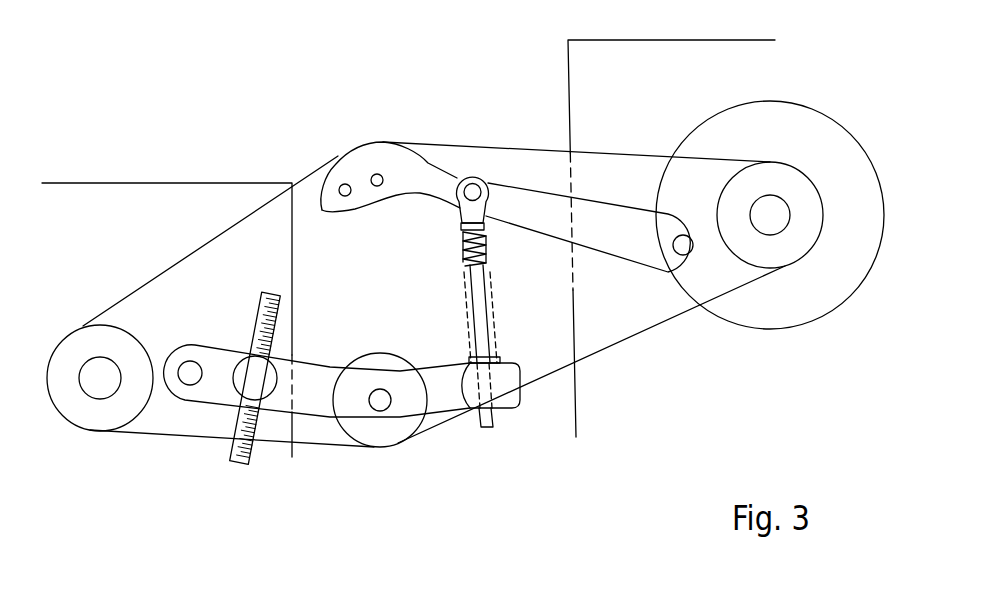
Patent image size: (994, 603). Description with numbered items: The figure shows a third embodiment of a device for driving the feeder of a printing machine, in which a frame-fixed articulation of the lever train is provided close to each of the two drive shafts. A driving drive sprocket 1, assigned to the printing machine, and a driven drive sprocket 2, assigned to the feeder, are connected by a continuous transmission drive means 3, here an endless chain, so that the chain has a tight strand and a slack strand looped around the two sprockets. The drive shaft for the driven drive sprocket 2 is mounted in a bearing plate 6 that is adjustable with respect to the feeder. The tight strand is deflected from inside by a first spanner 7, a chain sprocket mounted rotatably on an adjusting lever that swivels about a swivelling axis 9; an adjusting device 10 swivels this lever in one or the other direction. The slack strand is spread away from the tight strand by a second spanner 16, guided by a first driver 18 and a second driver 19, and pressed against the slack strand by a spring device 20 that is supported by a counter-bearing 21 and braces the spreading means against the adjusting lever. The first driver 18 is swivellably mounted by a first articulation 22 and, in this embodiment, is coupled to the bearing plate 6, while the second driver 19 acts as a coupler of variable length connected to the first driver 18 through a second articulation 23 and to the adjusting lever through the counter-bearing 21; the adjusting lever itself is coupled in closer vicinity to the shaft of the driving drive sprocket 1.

The driving drive sprocket 1 is at (100, 423).
The driven drive sprocket 2 is at (800, 184).
The transmission drive means 3 is at (173, 440).
The bearing plate 6 is at (820, 300).
The first spanner 7 is at (358, 433).
The swivelling axis 9 is at (186, 362).
The adjusting device 10 is at (256, 318).
The second spanner 16 is at (353, 158).
The first driver 18 is at (598, 217).
The second driver 19 is at (463, 284).
The spring device 20 is at (470, 345).
The counter-bearing 21 is at (470, 412).
The first articulation 22 is at (688, 236).
The second articulation 23 is at (482, 177).